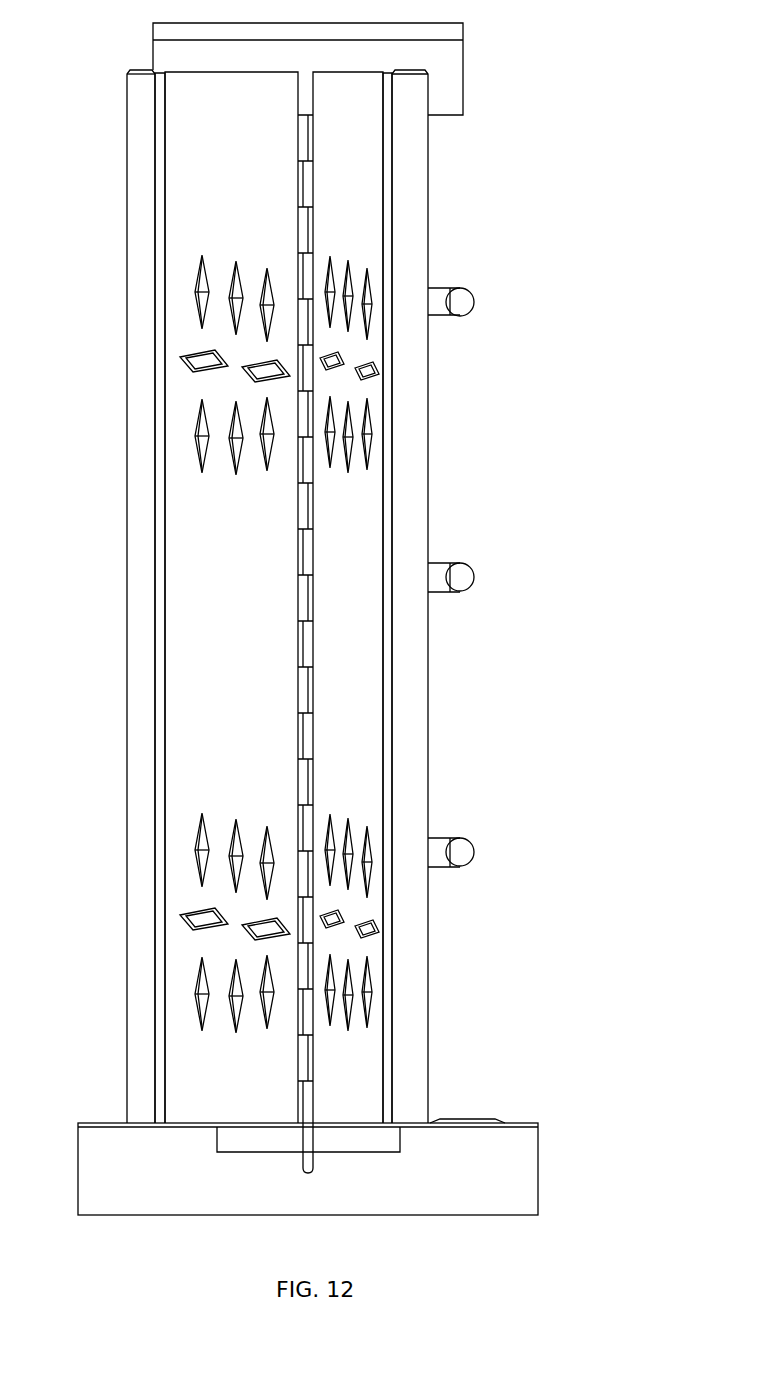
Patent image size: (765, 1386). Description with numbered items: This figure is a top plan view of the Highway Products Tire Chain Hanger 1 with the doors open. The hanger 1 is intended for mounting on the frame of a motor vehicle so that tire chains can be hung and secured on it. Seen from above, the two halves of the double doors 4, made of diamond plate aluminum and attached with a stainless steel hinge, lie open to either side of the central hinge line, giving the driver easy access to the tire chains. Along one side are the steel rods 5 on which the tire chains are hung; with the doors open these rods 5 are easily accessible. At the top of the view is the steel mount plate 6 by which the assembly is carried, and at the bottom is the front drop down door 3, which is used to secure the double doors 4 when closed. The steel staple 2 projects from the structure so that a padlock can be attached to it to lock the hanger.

The Highway Products Tire Chain Hanger 1 is at (578, 558).
The steel staple 2 is at (301, 1174).
The front drop down door 3 is at (493, 1120).
The double doors 4 is at (126, 252).
The steel rod 5 is at (474, 312).
The steel mount plate 6 is at (464, 45).